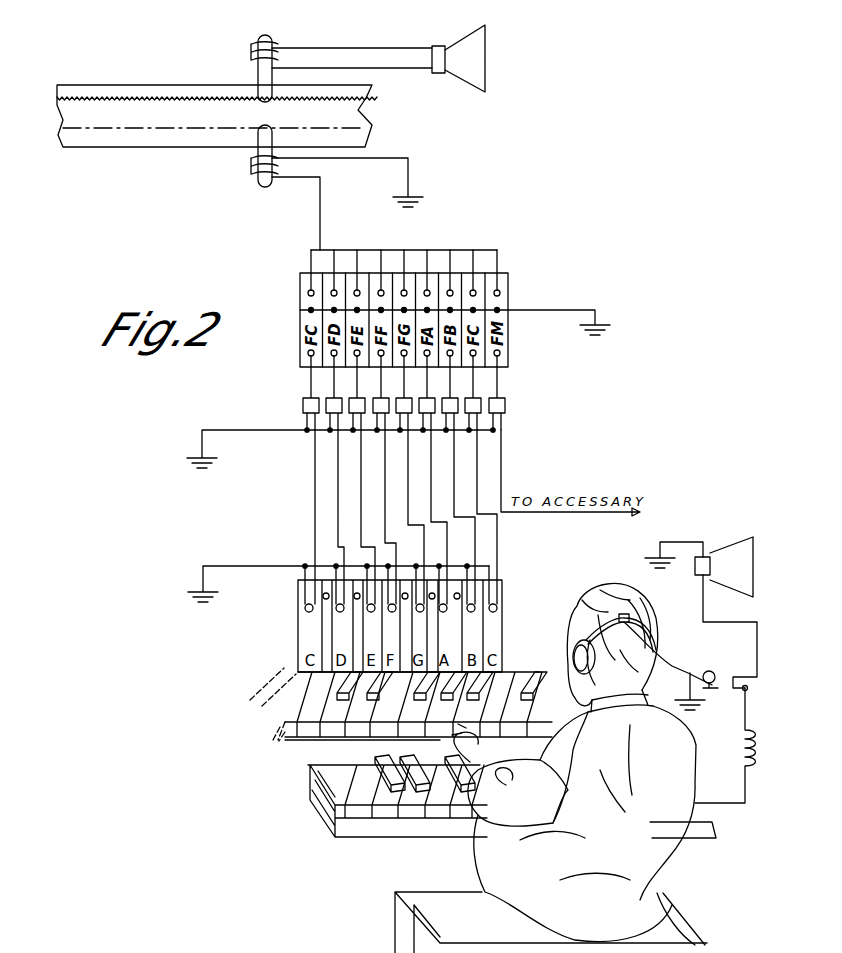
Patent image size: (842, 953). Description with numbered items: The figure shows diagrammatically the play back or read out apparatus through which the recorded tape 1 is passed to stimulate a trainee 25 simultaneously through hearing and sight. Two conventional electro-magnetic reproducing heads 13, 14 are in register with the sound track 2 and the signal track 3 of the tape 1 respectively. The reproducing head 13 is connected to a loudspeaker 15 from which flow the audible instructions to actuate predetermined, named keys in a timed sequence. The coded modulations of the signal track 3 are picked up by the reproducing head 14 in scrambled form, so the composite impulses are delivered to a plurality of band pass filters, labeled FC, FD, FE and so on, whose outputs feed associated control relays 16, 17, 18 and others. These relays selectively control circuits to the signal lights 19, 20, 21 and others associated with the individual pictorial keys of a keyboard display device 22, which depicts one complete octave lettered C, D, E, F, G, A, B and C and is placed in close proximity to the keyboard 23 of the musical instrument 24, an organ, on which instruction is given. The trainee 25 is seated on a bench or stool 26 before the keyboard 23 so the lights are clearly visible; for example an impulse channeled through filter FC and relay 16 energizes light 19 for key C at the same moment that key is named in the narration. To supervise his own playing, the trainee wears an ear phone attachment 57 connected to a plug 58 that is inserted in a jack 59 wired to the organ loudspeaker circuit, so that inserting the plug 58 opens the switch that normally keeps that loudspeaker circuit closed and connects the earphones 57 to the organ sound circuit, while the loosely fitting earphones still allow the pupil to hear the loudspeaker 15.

The tape 1 is at (103, 76).
The sound track 2 is at (135, 97).
The signal track 3 is at (137, 131).
The electro-magnetic reproducing head 13 is at (262, 65).
The electro-magnetic reproducing head 14 is at (262, 148).
The loudspeaker 15 is at (470, 60).
The control relay 16 is at (302, 405).
The control relay 17 is at (353, 398).
The control relay 18 is at (327, 397).
The signal light 19 is at (305, 610).
The signal light 20 is at (336, 612).
The signal light 21 is at (370, 612).
The keyboard display device 22 is at (464, 564).
The keyboard 23 is at (342, 713).
The musical instrument 24 is at (305, 741).
The trainee 25 is at (640, 862).
The bench or stool 26 is at (428, 880).
The ear phone attachment 57 is at (582, 660).
The plug 58 is at (688, 655).
The jack 59 is at (731, 698).